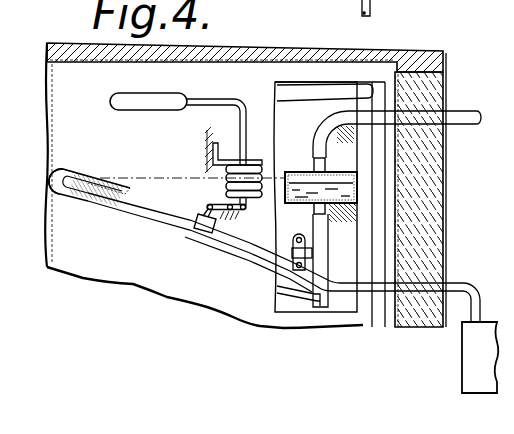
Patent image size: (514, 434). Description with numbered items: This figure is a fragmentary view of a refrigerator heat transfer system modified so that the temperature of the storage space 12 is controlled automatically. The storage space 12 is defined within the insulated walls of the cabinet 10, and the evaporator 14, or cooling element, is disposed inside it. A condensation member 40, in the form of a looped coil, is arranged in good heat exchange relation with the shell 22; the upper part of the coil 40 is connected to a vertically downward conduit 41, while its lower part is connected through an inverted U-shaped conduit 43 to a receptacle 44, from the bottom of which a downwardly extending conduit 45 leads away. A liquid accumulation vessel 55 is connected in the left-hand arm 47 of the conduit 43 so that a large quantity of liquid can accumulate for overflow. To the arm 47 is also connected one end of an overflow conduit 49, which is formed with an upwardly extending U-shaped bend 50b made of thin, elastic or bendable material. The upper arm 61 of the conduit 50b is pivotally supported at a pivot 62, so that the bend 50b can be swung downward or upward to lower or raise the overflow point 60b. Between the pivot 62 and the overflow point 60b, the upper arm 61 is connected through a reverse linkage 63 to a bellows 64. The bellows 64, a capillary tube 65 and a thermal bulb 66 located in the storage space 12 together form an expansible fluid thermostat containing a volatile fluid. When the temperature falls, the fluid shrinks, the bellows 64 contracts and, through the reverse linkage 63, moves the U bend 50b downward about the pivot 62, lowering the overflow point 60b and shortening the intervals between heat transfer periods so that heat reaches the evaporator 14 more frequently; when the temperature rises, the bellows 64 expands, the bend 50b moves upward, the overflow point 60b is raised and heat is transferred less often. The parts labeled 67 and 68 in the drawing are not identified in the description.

The cabinet 10 is at (446, 53).
The storage space 12 is at (118, 267).
The evaporator 14 is at (273, 87).
The shell 22 is at (310, 81).
The condensation member 40 is at (305, 100).
The conduit 41 is at (374, 315).
The inverted U-shaped conduit 43 is at (462, 115).
The receptacle 44 is at (466, 366).
The conduit 45 is at (372, 7).
The left-hand arm 47 is at (322, 245).
The overflow conduit 49 is at (461, 290).
The U-shaped bend 50b is at (91, 174).
The liquid accumulation vessel 55 is at (296, 172).
The overflow point 60b is at (58, 166).
The upper arm 61 is at (141, 193).
The pivot 62 is at (298, 236).
The reverse linkage 63 is at (221, 200).
The bellows 64 is at (237, 160).
The capillary tube 65 is at (203, 99).
The thermal bulb 66 is at (143, 100).
The outer wall 67 is at (513, 65).
The lead 68 is at (513, 287).